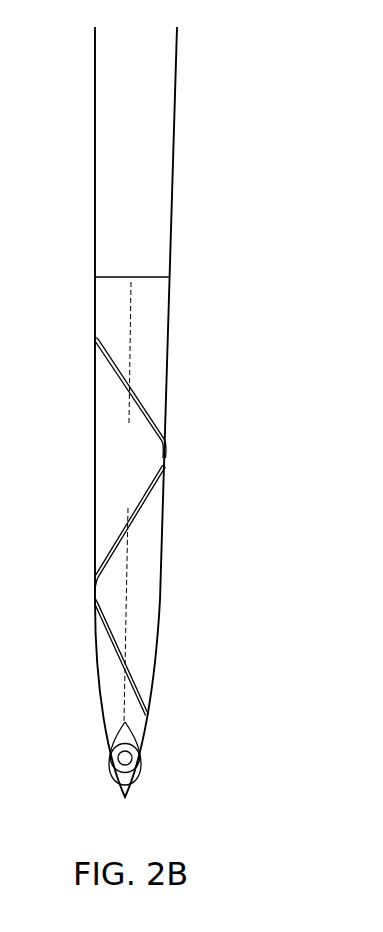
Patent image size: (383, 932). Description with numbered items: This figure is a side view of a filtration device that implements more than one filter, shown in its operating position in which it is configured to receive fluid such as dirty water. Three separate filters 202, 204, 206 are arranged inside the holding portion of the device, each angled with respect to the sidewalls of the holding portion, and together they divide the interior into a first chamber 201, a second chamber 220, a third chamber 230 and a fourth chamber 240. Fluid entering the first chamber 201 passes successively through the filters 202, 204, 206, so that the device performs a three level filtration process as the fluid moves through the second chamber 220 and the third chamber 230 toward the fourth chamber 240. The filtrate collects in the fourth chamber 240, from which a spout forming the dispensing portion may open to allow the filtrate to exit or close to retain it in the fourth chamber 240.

The first chamber 201 is at (153, 358).
The filter 202 is at (138, 403).
The filter 204 is at (137, 520).
The filter 206 is at (125, 662).
The second chamber 220 is at (128, 482).
The third chamber 230 is at (137, 593).
The fourth chamber 240 is at (115, 713).